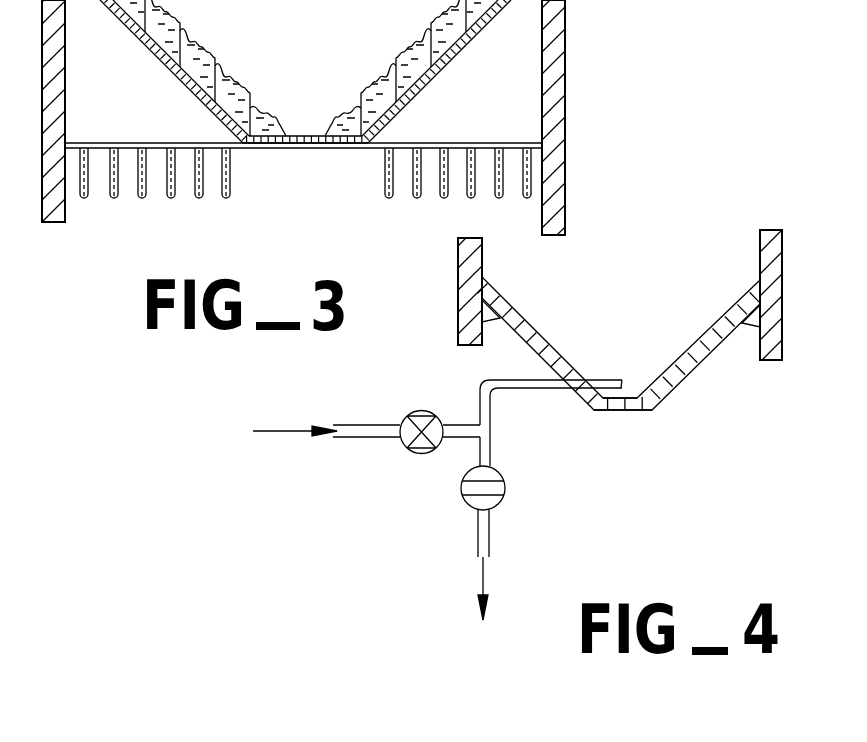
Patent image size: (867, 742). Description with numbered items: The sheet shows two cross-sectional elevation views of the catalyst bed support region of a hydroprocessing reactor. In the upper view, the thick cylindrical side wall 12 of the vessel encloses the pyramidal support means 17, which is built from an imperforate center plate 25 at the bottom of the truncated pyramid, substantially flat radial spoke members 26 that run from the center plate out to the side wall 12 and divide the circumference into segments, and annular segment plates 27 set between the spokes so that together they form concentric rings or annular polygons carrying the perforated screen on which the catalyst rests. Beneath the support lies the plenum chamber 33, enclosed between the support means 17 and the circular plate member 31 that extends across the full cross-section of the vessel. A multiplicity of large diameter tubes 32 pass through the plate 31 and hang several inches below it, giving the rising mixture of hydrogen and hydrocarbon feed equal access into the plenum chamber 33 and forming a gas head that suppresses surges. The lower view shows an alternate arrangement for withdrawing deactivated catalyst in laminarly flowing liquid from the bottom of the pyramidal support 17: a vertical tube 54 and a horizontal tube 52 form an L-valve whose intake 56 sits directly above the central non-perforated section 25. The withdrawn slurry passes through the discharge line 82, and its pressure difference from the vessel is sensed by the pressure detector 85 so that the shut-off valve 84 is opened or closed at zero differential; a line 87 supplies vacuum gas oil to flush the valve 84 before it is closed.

In FIG. 3, the cylindrical side wall 12 is at (566, 60).
In FIG. 4, the support means 17 is at (723, 352).
In FIG. 3, the imperforate center plate 25 is at (304, 149).
In FIG. 4, the imperforate center plate 25 is at (623, 411).
In FIG. 3, the radial spoke members 26 is at (462, 48).
In FIG. 3, the segment plates 27 is at (516, 0).
In FIG. 3, the circular plate member 31 is at (431, 143).
In FIG. 3, the tubes 32 is at (228, 182).
In FIG. 3, the plenum chamber 33 is at (140, 98).
In FIG. 4, the horizontal tube 52 is at (599, 379).
In FIG. 4, the vertical tube 54 is at (491, 451).
In FIG. 4, the intake 56 is at (630, 392).
In FIG. 4, the discharge line 82 is at (490, 528).
In FIG. 4, the shut-off valve 84 is at (499, 476).
In FIG. 4, the pressure detector 85 is at (404, 418).
In FIG. 4, the line 87 is at (458, 440).